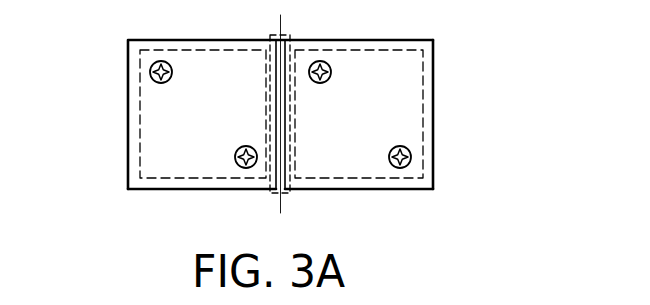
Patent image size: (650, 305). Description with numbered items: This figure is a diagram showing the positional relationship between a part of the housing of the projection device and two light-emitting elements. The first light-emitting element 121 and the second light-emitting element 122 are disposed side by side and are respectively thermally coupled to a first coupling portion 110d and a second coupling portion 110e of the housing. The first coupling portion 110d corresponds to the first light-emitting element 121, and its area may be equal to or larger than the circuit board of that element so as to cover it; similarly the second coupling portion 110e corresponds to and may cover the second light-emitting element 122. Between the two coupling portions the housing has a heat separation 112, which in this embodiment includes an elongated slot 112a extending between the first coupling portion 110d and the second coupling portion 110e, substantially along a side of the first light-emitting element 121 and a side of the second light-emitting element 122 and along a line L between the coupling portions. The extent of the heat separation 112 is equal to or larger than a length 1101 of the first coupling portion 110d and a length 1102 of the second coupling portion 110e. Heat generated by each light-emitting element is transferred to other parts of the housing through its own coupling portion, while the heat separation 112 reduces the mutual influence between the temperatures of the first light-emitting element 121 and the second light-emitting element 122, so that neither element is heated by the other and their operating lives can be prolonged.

The first coupling portion 110d is at (138, 43).
The second coupling portion 110e is at (429, 42).
The length of the first coupling portion 1101 is at (128, 162).
The length of the second coupling portion 1102 is at (433, 172).
The first light-emitting element 121 is at (128, 112).
The second light-emitting element 122 is at (435, 117).
The heat separation 112 is at (288, 195).
The elongated slot 112a is at (276, 176).
The line L is at (282, 28).